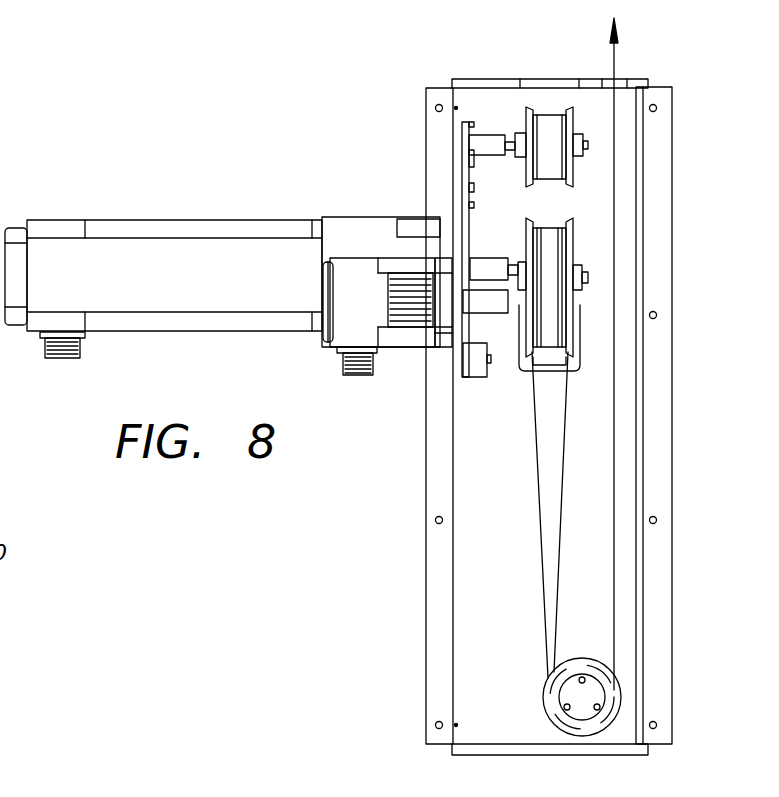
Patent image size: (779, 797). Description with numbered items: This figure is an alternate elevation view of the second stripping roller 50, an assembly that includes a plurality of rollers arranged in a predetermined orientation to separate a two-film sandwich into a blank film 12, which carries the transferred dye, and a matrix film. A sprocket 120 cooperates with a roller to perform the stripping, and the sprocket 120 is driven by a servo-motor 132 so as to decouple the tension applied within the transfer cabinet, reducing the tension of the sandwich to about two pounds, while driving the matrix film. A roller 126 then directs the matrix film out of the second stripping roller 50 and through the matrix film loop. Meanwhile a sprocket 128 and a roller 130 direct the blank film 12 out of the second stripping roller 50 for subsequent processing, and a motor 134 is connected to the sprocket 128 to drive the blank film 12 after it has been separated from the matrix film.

The blank film 12 is at (614, 60).
The second stripping roller 50 is at (686, 531).
The sprocket 120 is at (577, 230).
The roller 126 is at (577, 168).
The sprocket 128 is at (577, 328).
The roller 130 is at (618, 692).
The servo-motor 132 is at (208, 220).
The motor 134 is at (405, 347).